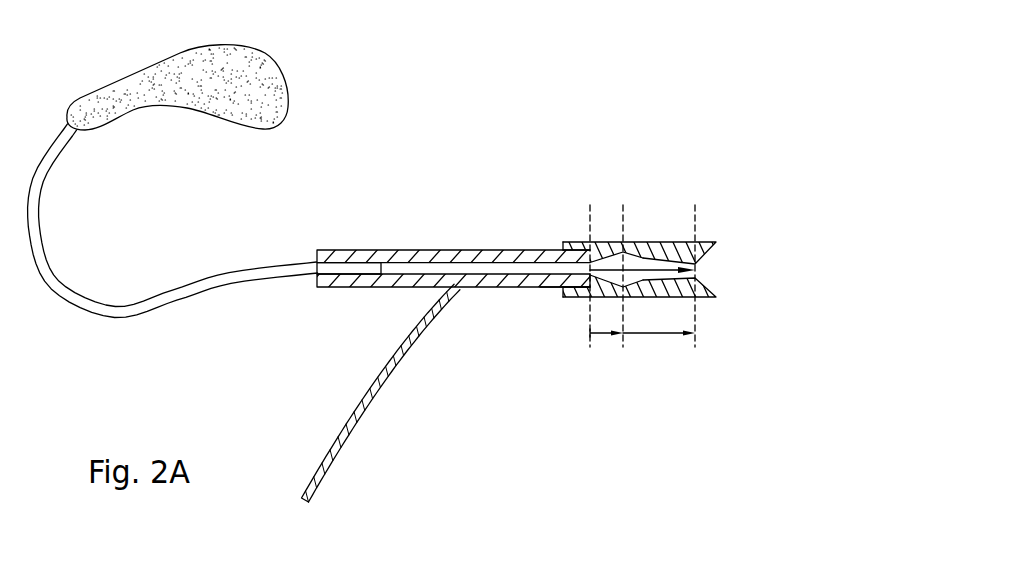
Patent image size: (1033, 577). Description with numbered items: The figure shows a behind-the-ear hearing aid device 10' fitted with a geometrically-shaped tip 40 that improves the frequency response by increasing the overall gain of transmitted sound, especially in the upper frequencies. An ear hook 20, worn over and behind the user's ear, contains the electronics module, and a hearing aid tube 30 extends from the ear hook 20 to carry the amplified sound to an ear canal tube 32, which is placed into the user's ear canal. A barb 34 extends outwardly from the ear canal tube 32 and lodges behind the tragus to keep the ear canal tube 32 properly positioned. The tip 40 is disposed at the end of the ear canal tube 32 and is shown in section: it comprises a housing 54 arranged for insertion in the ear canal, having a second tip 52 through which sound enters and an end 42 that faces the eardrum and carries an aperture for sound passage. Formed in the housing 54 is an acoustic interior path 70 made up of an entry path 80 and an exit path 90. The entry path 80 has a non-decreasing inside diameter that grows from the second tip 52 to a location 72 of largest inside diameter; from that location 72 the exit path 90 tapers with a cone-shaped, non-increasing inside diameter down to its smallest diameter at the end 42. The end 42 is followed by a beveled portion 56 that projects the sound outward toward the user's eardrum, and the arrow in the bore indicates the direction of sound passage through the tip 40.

The behind-the-ear hearing aid device 10' is at (403, 273).
The ear hook 20 is at (268, 130).
The hearing aid tube 30 is at (80, 288).
The ear canal tube 32 is at (430, 249).
The barb 34 is at (385, 367).
The tip 40 is at (658, 172).
The end of tip 42 is at (695, 230).
The second tip 52 is at (563, 292).
The housing 54 is at (607, 243).
The beveled portion 56 is at (697, 295).
The acoustic interior path 70 is at (643, 258).
The location of largest inside diameter 72 is at (624, 210).
The entry path 80 is at (595, 335).
The exit path 90 is at (650, 335).